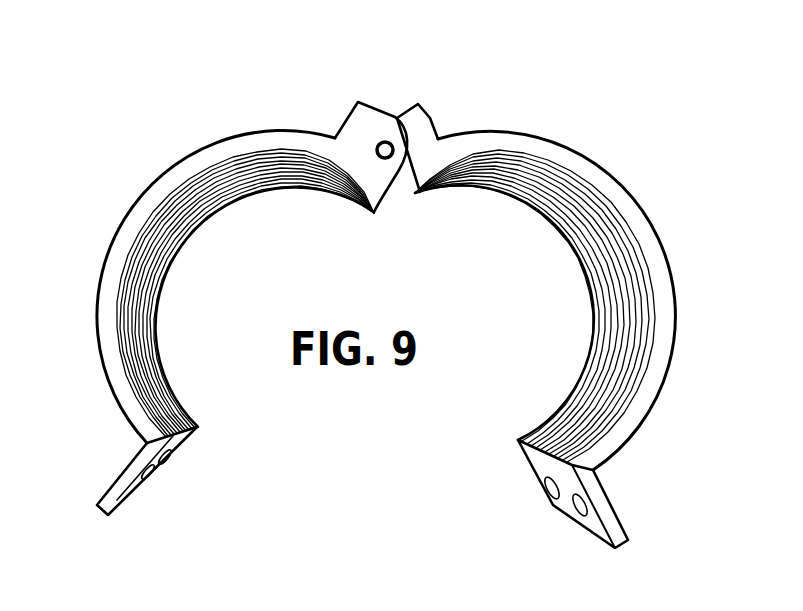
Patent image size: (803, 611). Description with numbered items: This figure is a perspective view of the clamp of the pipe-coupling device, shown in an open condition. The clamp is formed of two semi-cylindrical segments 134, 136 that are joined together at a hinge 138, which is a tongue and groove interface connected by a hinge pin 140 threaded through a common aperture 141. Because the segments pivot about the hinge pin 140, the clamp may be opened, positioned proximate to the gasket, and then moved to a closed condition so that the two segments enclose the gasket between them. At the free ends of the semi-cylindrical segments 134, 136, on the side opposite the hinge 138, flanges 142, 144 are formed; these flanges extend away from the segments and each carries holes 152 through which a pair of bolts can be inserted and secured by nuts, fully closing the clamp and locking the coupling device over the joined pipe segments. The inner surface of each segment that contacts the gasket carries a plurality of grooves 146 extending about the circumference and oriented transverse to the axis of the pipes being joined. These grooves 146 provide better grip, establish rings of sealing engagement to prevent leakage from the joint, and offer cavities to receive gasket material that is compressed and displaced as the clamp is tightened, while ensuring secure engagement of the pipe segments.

The semi-cylindrical segment 134 is at (114, 249).
The semi-cylindrical segment 136 is at (604, 167).
The hinge 138 is at (400, 90).
The hinge pin 140 is at (397, 148).
The common aperture 141 is at (385, 150).
The flange 142 is at (117, 478).
The flange 144 is at (622, 523).
The grooves 146 is at (236, 172).
The holes 152 is at (160, 465).